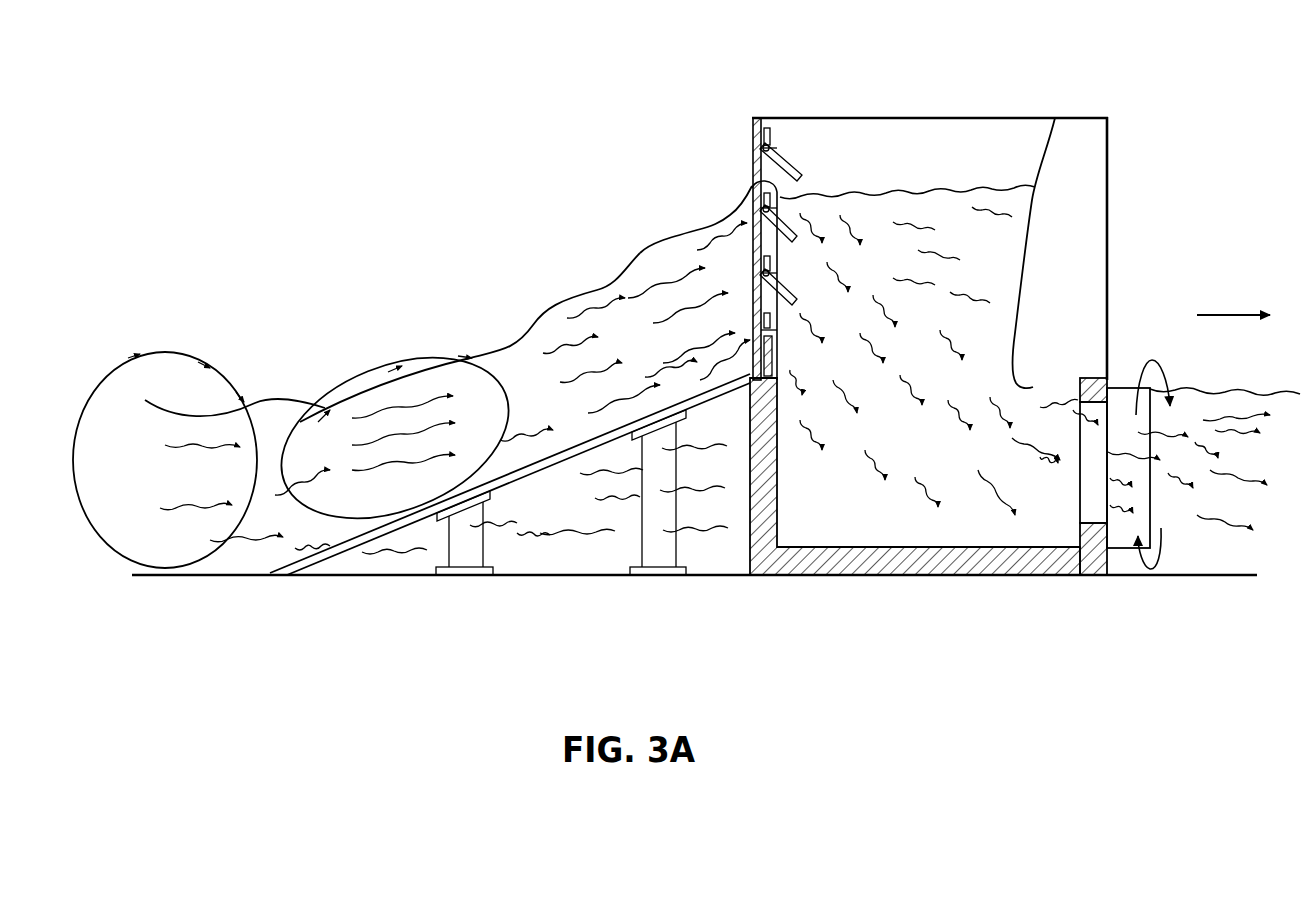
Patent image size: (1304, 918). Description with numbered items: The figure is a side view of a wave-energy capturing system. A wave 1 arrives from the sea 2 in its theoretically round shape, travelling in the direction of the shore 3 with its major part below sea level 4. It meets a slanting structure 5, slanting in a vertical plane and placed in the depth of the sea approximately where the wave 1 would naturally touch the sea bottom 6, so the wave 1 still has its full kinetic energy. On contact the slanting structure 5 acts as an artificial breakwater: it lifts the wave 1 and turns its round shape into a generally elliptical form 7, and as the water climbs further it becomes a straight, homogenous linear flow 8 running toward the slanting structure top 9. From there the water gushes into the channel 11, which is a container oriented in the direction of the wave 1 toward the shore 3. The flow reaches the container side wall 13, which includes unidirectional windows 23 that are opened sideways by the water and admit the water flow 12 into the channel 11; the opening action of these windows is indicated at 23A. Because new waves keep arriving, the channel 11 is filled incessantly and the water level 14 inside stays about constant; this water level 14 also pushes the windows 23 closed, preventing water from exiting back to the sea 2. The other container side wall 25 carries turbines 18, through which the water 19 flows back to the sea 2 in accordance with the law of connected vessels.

The wave 1 is at (152, 352).
The sea 2 is at (1228, 470).
The shore 3 is at (1160, 352).
The sea level 4 is at (276, 402).
The slanting structure 5 is at (385, 542).
The sea bottom 6 is at (550, 577).
The elliptical form 7 is at (405, 355).
The linear flow 8 is at (533, 330).
The slanting structure top 9 is at (750, 203).
The channel 11 is at (1110, 181).
The water flow 12 is at (793, 292).
The container side wall 13 is at (745, 525).
The water level 14 is at (968, 188).
The turbines 18 is at (1122, 550).
The water 19 is at (1078, 470).
The unidirectional windows 23 is at (776, 146).
The air flow through louver 23A is at (750, 347).
The other container side wall 25 is at (1085, 558).